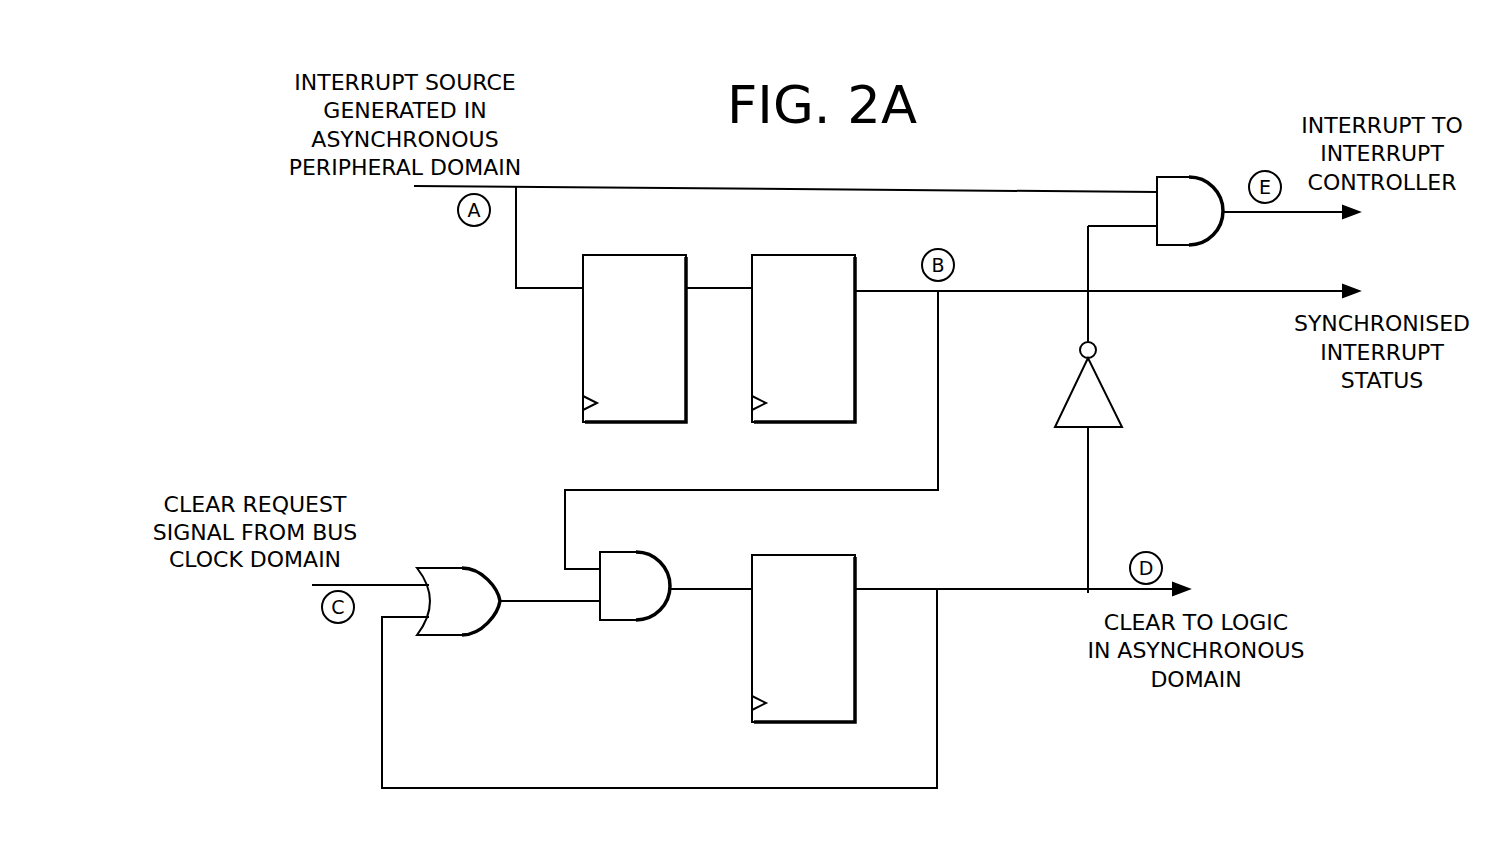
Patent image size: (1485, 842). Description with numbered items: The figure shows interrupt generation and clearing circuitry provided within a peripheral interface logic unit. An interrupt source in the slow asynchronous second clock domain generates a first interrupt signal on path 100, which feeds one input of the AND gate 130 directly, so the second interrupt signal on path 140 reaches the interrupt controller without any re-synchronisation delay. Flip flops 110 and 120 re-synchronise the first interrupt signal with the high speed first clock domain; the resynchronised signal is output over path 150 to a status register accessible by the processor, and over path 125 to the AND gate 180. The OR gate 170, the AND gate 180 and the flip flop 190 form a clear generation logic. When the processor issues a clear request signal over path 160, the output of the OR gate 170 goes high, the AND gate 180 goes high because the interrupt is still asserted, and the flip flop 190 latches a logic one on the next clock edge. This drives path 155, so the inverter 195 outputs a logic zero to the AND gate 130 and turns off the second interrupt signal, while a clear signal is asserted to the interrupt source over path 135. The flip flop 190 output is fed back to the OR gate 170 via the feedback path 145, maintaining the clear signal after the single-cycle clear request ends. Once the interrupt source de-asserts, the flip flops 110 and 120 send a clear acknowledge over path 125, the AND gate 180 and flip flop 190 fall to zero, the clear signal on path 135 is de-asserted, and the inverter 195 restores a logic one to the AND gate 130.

The path 100 is at (430, 190).
The flip flop 110 is at (652, 424).
The flip flop 120 is at (820, 424).
The path 125 is at (939, 471).
The AND gate 130 is at (1187, 177).
The path 135 is at (1008, 591).
The path 140 is at (1292, 214).
The feedback path from FF3 output to OR gate 145 is at (546, 788).
The path 150 is at (1224, 293).
The path 155 is at (1090, 488).
The path 160 is at (411, 584).
The OR gate 170 is at (452, 637).
The AND gate 180 is at (634, 622).
The flip flop 190 is at (821, 724).
The inverter 195 is at (1110, 389).